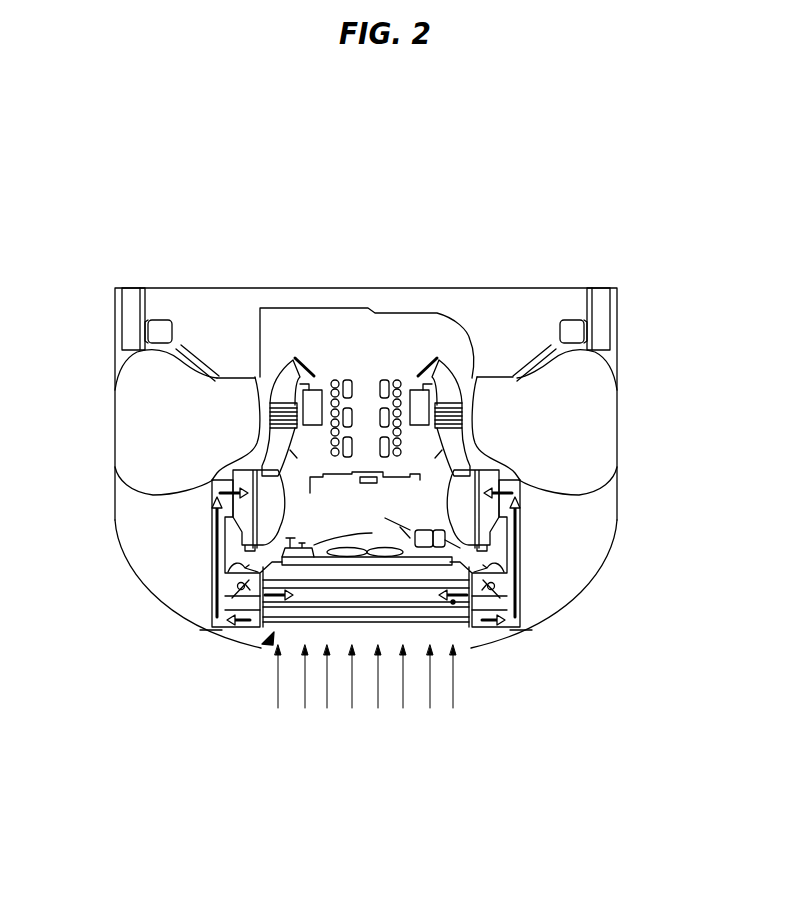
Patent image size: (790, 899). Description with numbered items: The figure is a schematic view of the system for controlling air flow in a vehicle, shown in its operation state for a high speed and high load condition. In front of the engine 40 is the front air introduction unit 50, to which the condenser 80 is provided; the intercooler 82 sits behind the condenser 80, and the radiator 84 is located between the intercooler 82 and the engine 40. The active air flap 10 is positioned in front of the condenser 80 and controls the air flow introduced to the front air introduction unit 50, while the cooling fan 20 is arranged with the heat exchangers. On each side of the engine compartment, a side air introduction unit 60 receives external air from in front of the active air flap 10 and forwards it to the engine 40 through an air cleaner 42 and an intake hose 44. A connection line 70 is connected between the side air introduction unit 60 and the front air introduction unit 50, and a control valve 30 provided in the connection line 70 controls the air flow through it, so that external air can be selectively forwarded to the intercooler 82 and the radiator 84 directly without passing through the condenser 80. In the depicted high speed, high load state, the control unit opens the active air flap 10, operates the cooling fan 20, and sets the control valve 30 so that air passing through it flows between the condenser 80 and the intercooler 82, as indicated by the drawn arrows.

The active air flap 10 is at (468, 630).
The cooling fan 20 is at (480, 540).
The control valve 30 is at (232, 598).
The engine 40 is at (421, 327).
The air cleaner 42 is at (480, 460).
The intake hose 44 is at (480, 397).
The front air introduction unit 50 is at (272, 647).
The side air introduction unit 60 is at (212, 570).
The connection line 70 is at (223, 597).
The condenser 80 is at (417, 607).
The intercooler 82 is at (355, 584).
The radiator 84 is at (313, 566).